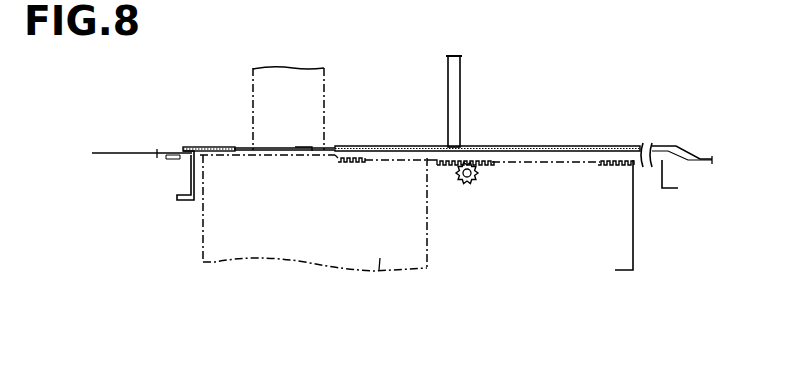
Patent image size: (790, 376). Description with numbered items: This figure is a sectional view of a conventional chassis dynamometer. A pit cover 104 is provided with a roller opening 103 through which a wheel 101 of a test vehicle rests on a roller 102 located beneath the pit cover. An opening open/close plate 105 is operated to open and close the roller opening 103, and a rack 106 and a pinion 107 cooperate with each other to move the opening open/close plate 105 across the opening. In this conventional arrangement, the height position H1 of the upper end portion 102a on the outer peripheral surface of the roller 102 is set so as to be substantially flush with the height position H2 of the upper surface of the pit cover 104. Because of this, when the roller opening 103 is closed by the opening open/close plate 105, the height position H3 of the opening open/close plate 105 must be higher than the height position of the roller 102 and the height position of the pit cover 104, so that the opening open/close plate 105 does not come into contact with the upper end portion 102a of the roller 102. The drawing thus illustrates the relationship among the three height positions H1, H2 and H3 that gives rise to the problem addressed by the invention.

The wheel 101 is at (324, 83).
The roller 102 is at (379, 268).
The upper end portion 102a is at (254, 160).
The roller opening 103 is at (198, 147).
The pit cover 104 is at (163, 152).
The opening open/close plate 105 is at (226, 148).
The rack 106 is at (482, 163).
The pinion 107 is at (468, 185).
The height position of upper end portion of roller H1 is at (217, 153).
The height position of upper surface of pit cover H2 is at (125, 154).
The height position of opening open/close plate H3 is at (237, 153).